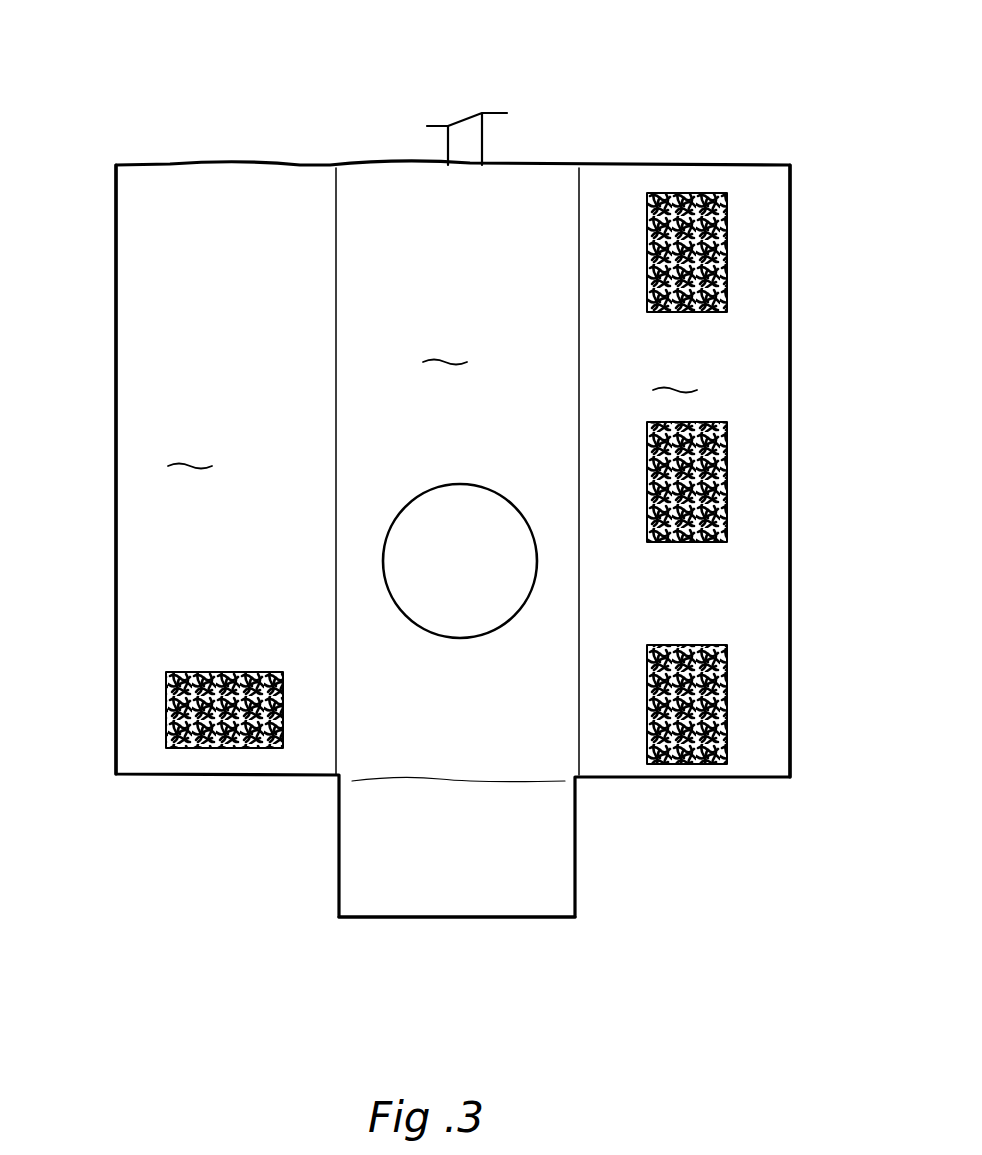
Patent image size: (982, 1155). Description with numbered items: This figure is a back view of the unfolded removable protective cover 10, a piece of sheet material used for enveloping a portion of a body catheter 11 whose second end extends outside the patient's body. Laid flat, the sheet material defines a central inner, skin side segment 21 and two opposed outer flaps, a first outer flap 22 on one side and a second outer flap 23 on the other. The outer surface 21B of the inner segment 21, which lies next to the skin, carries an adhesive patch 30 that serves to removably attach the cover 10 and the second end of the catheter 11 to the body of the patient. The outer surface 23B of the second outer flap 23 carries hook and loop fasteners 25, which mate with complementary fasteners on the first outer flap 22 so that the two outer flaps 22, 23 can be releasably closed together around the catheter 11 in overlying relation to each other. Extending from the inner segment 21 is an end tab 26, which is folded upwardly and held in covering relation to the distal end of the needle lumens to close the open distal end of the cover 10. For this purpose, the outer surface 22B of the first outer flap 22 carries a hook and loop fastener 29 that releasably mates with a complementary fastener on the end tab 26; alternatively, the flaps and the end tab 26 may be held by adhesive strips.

The removable protective cover 10 is at (152, 142).
The body catheter 11 is at (482, 142).
The inner, skin side segment 21 is at (358, 185).
The outer surface of the inner segment 21B is at (445, 350).
The first outer flap 22 is at (131, 277).
The outer surface of the first outer flap 22B is at (190, 453).
The second outer flap 23 is at (637, 163).
The outer surface of the second outer flap 23B is at (675, 376).
The hook and loop fastener 25 is at (727, 270).
The end tab 26 is at (518, 915).
The hook and loop fastener 29 is at (219, 748).
The adhesive patch 30 is at (465, 630).